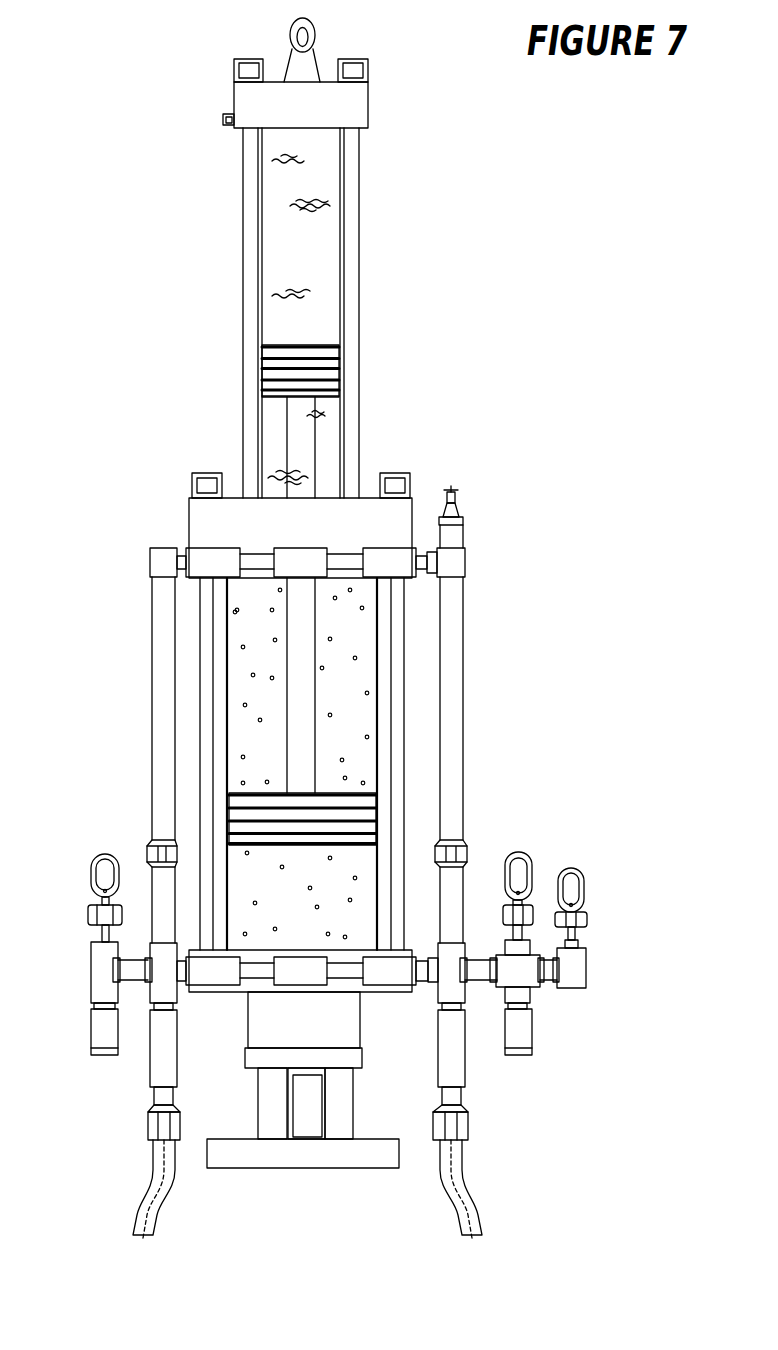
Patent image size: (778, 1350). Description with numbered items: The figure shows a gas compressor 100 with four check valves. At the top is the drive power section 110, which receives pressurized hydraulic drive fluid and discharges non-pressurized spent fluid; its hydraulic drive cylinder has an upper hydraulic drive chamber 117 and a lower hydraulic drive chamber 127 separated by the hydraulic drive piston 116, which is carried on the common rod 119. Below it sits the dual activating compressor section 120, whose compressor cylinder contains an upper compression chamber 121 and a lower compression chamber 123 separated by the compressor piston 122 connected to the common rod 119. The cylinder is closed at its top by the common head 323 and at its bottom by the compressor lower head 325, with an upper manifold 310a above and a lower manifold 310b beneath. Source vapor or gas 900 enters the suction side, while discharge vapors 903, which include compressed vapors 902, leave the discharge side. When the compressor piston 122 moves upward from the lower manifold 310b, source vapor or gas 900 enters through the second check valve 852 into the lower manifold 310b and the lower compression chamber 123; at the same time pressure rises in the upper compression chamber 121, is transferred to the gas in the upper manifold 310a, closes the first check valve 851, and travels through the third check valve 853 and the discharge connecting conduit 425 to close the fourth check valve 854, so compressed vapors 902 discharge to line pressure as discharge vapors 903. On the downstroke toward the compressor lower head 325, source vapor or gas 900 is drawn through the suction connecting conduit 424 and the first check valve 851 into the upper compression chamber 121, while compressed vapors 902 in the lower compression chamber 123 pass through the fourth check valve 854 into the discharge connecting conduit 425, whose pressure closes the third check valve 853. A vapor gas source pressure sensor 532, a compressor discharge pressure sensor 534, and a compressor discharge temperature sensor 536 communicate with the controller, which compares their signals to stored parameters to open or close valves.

The gas compressor 100 is at (112, 44).
The drive power section 110 is at (208, 290).
The upper hydraulic drive chamber 117 is at (275, 193).
The hydraulic drive piston 116 is at (322, 345).
The lower hydraulic drive chamber 127 is at (272, 409).
The common rod 119 is at (315, 450).
The dual activating compressor section 120 is at (96, 757).
The upper manifold 310a is at (248, 540).
The common head 323 is at (190, 500).
The first check valve 851 is at (207, 548).
The third check valve 853 is at (395, 548).
The upper compression chamber 121 is at (240, 677).
The source vapor or gas 900 is at (355, 657).
The compressor piston 122 is at (355, 793).
The lower compression chamber 123 is at (243, 868).
The compressed vapors 902 is at (355, 878).
The lower manifold 310b is at (246, 998).
The compressor lower head 325 is at (410, 992).
The second check valve 852 is at (218, 986).
The fourth check valve 854 is at (390, 986).
The suction connecting conduit 424 is at (152, 728).
The discharge connecting conduit 425 is at (462, 728).
The vapor gas source pressure sensor 532 is at (148, 1126).
The compressor discharge pressure sensor 534 is at (466, 1126).
The discharge vapors 903 is at (458, 1190).
The compressor discharge temperature sensor 536 is at (519, 852).